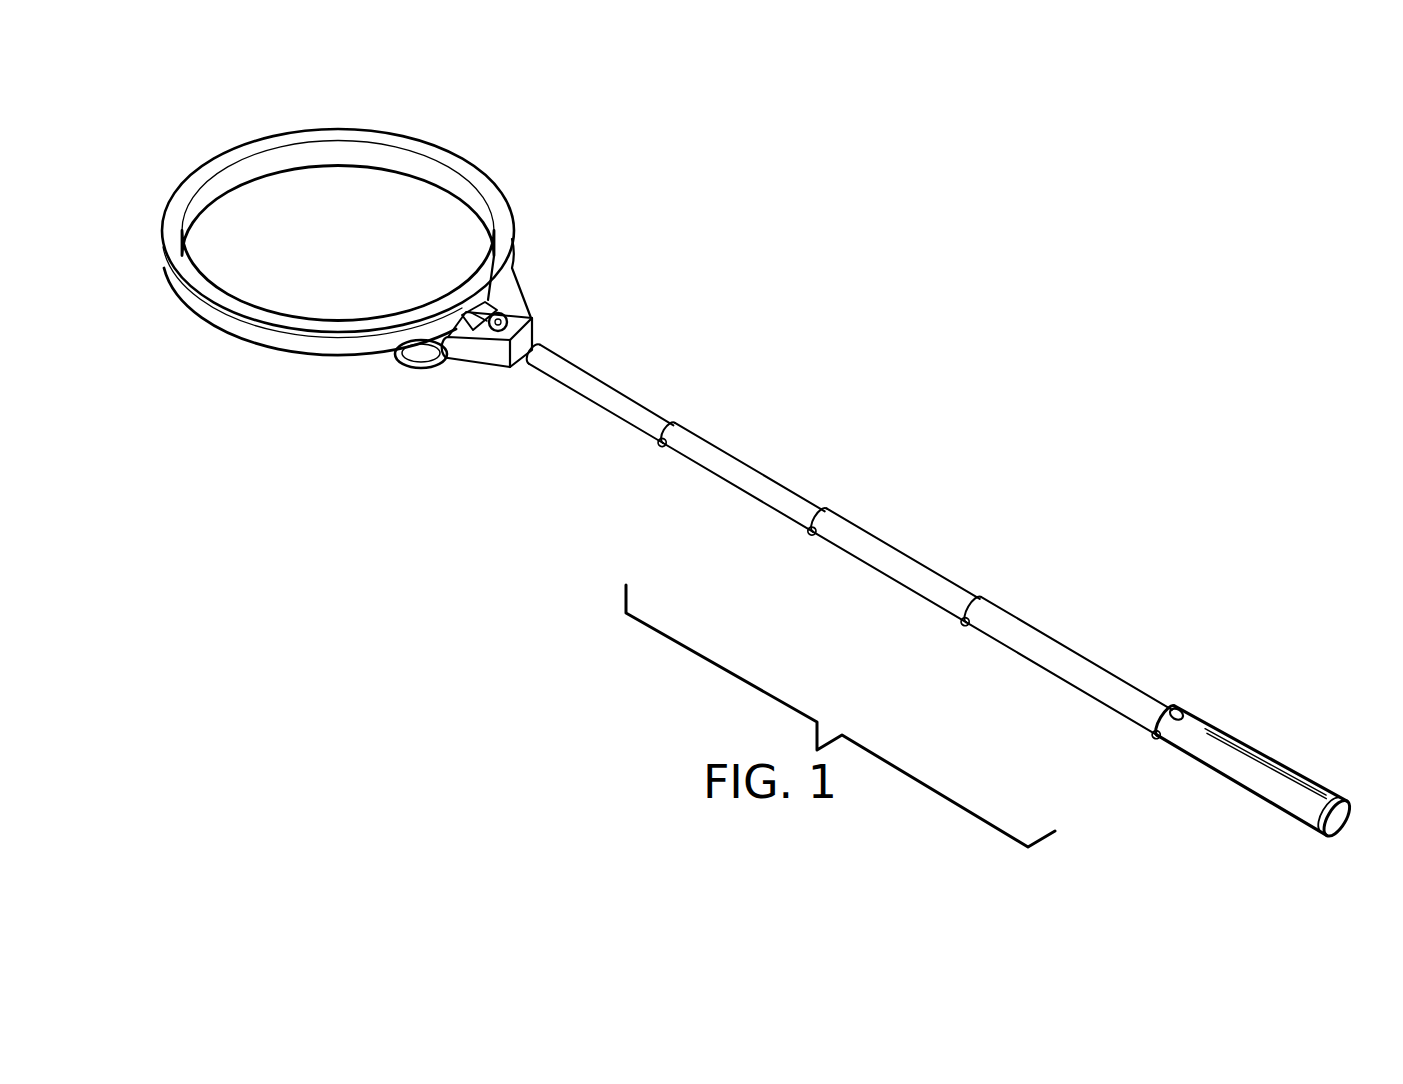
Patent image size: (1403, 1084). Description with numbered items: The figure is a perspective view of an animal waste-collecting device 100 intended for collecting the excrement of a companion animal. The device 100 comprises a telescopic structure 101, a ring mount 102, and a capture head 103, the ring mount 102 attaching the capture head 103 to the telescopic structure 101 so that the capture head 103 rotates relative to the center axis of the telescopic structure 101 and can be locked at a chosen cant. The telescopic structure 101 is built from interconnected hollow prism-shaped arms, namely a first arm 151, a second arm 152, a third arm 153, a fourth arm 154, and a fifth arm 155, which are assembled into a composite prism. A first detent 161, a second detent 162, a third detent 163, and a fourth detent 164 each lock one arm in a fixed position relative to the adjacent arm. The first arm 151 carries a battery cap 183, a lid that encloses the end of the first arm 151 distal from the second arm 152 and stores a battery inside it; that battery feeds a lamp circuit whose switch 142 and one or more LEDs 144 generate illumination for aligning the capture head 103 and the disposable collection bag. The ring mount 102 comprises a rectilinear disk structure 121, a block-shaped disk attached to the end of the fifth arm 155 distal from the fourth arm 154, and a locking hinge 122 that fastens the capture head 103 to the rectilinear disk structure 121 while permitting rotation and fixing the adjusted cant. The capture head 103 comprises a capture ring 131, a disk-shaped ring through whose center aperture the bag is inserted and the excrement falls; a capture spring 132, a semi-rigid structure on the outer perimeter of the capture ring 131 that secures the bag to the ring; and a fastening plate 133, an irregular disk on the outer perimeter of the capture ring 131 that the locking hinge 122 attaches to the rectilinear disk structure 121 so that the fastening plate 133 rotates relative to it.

The animal waste-collecting device 100 is at (1044, 297).
The telescopic structure 101 is at (1205, 820).
The ring mount 102 is at (960, 580).
The capture head 103 is at (368, 207).
The rectilinear disk structure 121 is at (483, 353).
The locking hinge 122 is at (467, 306).
The capture ring 131 is at (407, 140).
The capture spring 132 is at (348, 356).
The fastening plate 133 is at (430, 316).
The switch 142 is at (1180, 708).
The one or more LEDs 144 is at (502, 313).
The first arm 151 is at (1258, 758).
The second arm 152 is at (1047, 640).
The third arm 153 is at (897, 545).
The fourth arm 154 is at (755, 470).
The fifth arm 155 is at (620, 390).
The first detent 161 is at (1155, 740).
The second detent 162 is at (966, 625).
The third detent 163 is at (812, 535).
The fourth detent 164 is at (660, 452).
The battery cap 183 is at (1334, 816).